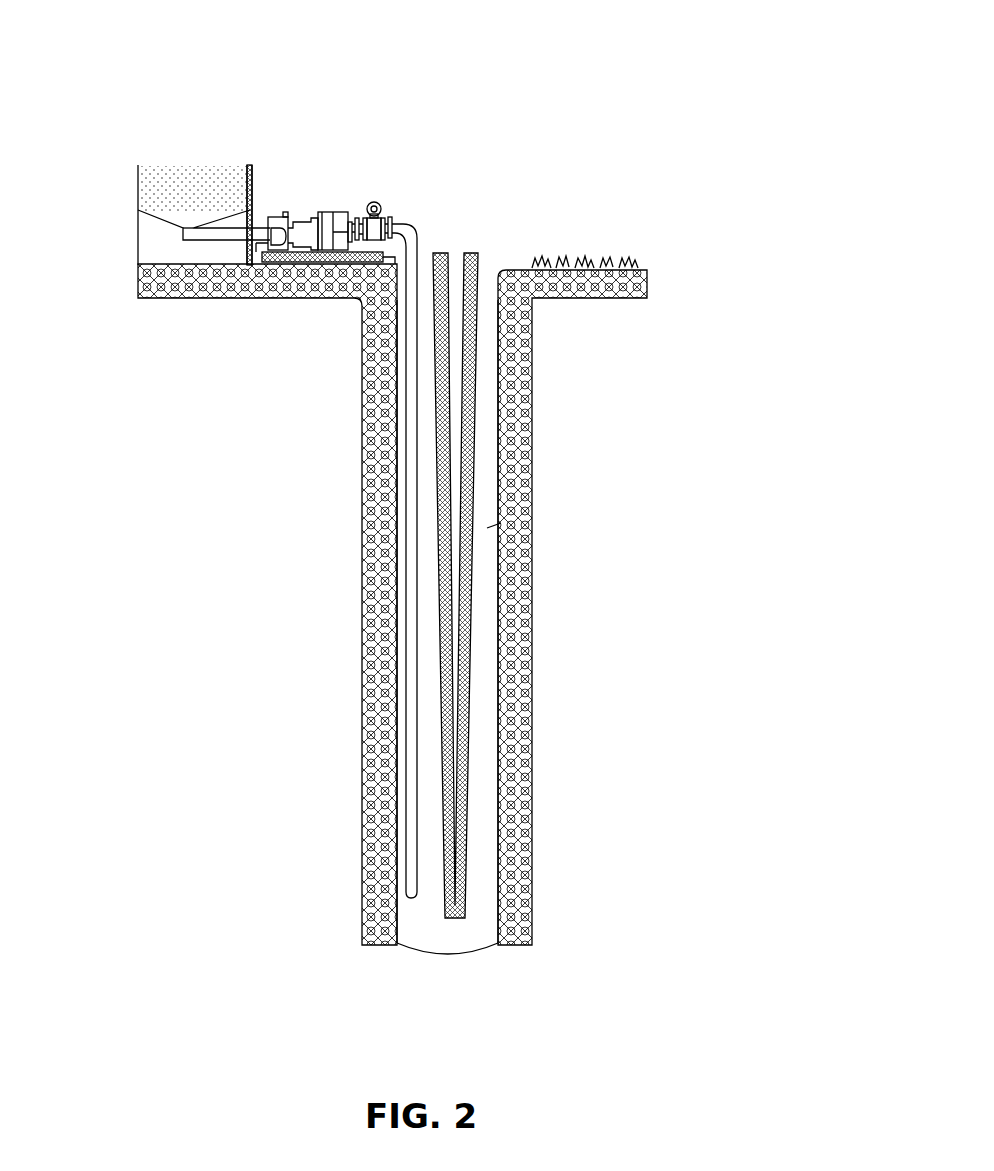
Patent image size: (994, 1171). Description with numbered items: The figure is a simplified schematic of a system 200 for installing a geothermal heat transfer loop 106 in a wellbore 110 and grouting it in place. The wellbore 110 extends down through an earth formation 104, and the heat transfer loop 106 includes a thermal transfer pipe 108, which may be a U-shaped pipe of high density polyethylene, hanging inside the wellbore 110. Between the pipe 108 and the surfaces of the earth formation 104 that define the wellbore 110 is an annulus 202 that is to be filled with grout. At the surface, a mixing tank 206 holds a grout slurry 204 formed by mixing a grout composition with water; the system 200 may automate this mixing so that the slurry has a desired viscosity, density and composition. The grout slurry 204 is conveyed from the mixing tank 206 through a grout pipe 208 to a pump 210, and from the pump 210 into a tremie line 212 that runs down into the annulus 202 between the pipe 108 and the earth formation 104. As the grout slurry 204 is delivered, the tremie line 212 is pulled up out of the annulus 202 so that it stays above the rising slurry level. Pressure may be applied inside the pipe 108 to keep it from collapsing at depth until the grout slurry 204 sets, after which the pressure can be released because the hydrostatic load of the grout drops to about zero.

The system 200 is at (744, 49).
The earth formation 104 is at (318, 551).
The heat transfer loop 106 is at (486, 221).
The pipe 108 is at (474, 350).
The wellbore 110 is at (530, 592).
The annulus 202 is at (533, 505).
The grout slurry 204 is at (140, 190).
The mixing tank 206 is at (222, 164).
The grout pipe 208 is at (264, 221).
The pump 210 is at (336, 210).
The tremie line 212 is at (393, 222).